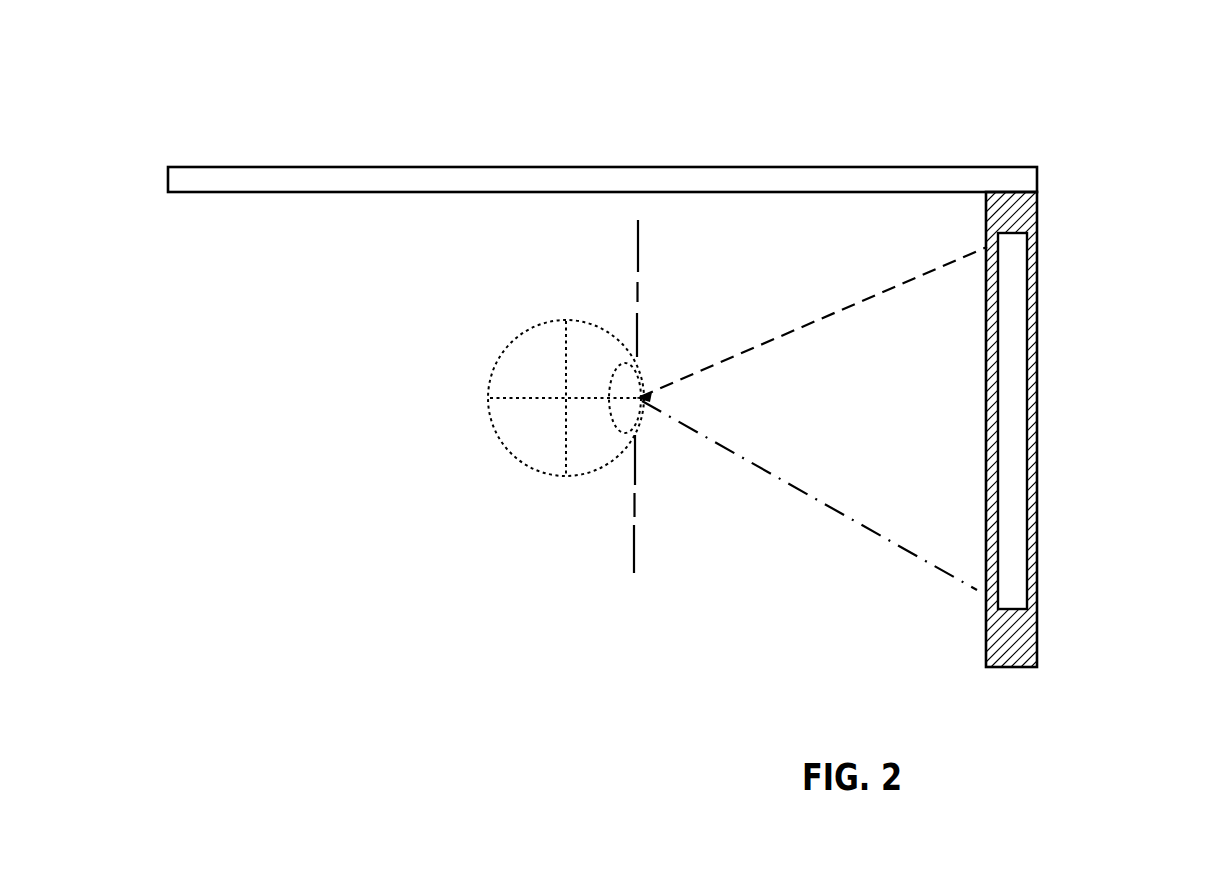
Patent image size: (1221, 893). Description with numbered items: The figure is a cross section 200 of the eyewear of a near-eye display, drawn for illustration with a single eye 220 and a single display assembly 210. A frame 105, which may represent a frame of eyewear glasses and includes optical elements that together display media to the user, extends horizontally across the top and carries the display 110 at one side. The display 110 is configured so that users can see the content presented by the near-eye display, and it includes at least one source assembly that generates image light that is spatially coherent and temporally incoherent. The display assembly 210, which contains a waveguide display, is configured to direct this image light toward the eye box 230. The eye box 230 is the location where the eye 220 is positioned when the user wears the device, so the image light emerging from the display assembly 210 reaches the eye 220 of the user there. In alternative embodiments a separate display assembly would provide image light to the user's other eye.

The cross section 200 is at (343, 51).
The frame 105 is at (892, 167).
The display assembly 210 is at (1008, 308).
The display 110 is at (1037, 543).
The eye 220 is at (528, 332).
The eye box 230 is at (633, 495).